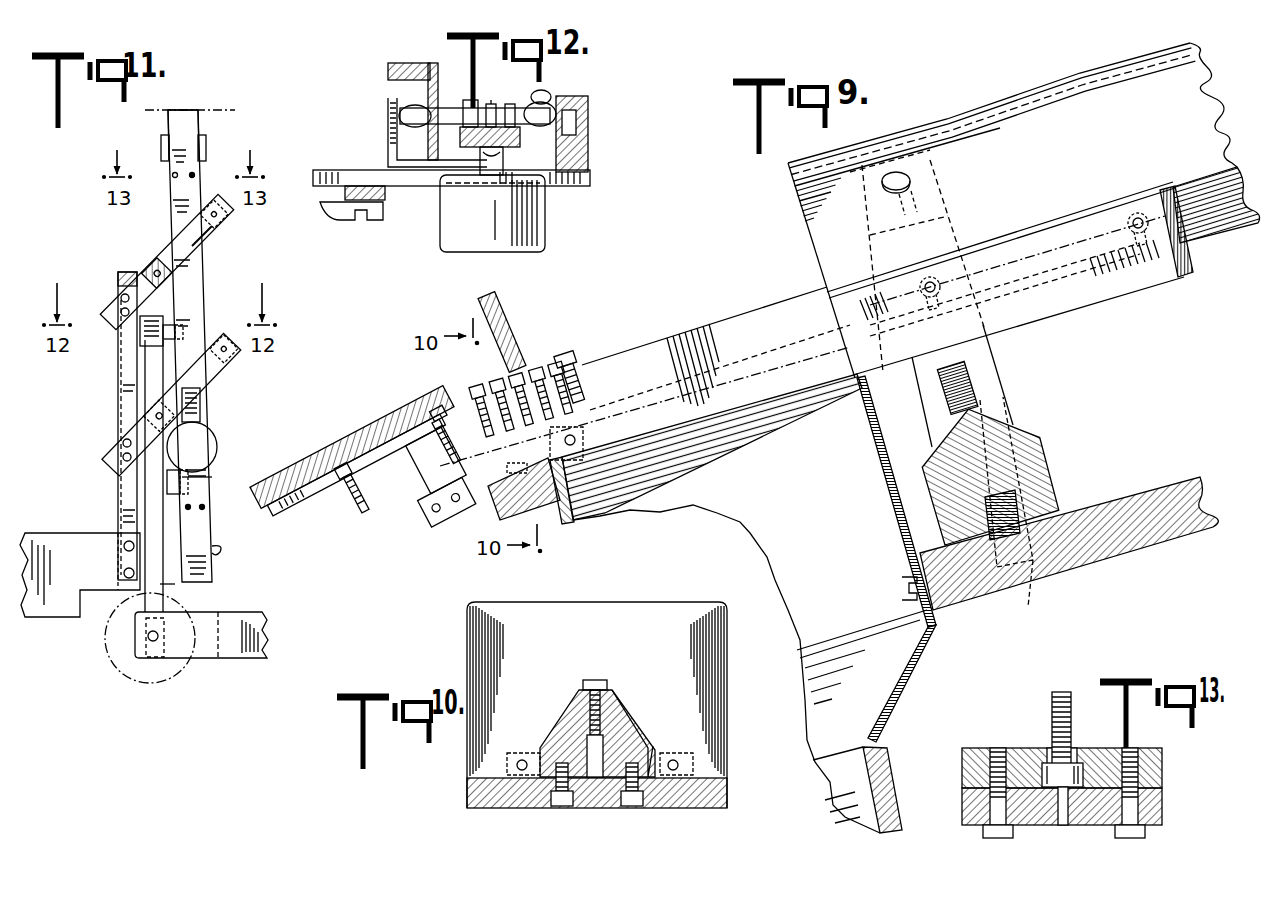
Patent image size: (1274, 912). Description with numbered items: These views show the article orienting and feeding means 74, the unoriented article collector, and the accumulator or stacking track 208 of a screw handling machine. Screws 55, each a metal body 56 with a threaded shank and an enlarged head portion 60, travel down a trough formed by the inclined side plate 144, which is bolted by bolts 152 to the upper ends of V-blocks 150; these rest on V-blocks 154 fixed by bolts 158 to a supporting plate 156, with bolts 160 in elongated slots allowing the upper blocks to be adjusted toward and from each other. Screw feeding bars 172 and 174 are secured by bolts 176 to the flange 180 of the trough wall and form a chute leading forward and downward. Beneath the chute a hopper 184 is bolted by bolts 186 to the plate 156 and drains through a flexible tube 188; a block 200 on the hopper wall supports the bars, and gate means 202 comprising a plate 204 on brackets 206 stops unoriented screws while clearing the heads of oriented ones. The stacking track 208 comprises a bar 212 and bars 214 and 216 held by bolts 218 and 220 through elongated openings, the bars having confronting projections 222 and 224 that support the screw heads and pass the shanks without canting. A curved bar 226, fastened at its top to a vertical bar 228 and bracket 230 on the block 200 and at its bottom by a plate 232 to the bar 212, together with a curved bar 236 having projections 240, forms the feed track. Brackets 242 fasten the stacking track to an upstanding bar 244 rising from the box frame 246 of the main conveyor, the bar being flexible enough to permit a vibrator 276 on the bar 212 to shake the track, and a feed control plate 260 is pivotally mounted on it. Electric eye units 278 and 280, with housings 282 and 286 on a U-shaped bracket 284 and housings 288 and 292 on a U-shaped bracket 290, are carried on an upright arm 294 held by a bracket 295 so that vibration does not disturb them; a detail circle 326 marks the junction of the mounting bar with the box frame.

In FIG. 12, the screw 55 is at (493, 100).
In FIG. 13, the metal body 56 is at (1052, 703).
In FIG. 9, the metal body 56 is at (586, 398).
In FIG. 10, the head portion 60 is at (595, 678).
In FIG. 13, the head portion 60 is at (1059, 780).
In FIG. 9, the head portion 60 is at (583, 363).
In FIG. 9, the article orienting and feeding means 74 is at (803, 276).
In FIG. 9, the inclined side plate 144 is at (990, 102).
In FIG. 9, the V-block 150 is at (988, 370).
In FIG. 9, the bolt 152 is at (897, 172).
In FIG. 9, the V-block 154 is at (1030, 440).
In FIG. 9, the supporting plate 156 is at (1137, 492).
In FIG. 9, the bolt 158 is at (1030, 590).
In FIG. 9, the bolt 160 is at (985, 390).
In FIG. 10, the screw feeding bar 172 is at (557, 730).
In FIG. 9, the screw feeding bar 172 is at (705, 333).
In FIG. 10, the screw feeding bar 174 is at (623, 733).
In FIG. 9, the screw feeding bar 174 is at (1026, 261).
In FIG. 9, the bolt 176 is at (942, 287).
In FIG. 9, the flange 180 is at (1230, 220).
In FIG. 9, the hopper 184 is at (792, 566).
In FIG. 9, the bolt 186 is at (902, 583).
In FIG. 9, the flexible tube 188 is at (865, 820).
In FIG. 10, the block 200 is at (470, 795).
In FIG. 9, the block 200 is at (550, 497).
In FIG. 10, the gate means 202 is at (466, 636).
In FIG. 9, the gate means 202 is at (527, 301).
In FIG. 10, the plate 204 is at (466, 664).
In FIG. 9, the plate 204 is at (513, 337).
In FIG. 10, the bracket 206 is at (520, 752).
In FIG. 9, the bracket 206 is at (572, 447).
In FIG. 13, the stacking track 208 is at (960, 760).
In FIG. 9, the stacking track 208 is at (353, 427).
In FIG. 11, the bar 212 is at (172, 190).
In FIG. 12, the bar 212 is at (527, 140).
In FIG. 13, the bar 212 is at (1157, 824).
In FIG. 12, the bar 214 is at (467, 107).
In FIG. 13, the bar 214 is at (980, 750).
In FIG. 12, the bar 216 is at (513, 115).
In FIG. 13, the bar 216 is at (1157, 757).
In FIG. 13, the bolt 218 is at (987, 812).
In FIG. 13, the bolt 220 is at (1167, 803).
In FIG. 13, the projection 222 is at (1048, 752).
In FIG. 13, the projection 224 is at (1077, 748).
In FIG. 11, the bar 226 is at (182, 112).
In FIG. 9, the bar 226 is at (270, 470).
In FIG. 9, the vertical bar 228 is at (420, 487).
In FIG. 9, the bracket 230 is at (427, 517).
In FIG. 11, the plate 232 is at (160, 148).
In FIG. 9, the curved bar 236 is at (340, 500).
In FIG. 9, the projection 240 is at (387, 457).
In FIG. 11, the bracket 242 is at (183, 328).
In FIG. 12, the bracket 242 is at (440, 153).
In FIG. 11, the upstanding bar 244 is at (160, 585).
In FIG. 12, the upstanding bar 244 is at (402, 62).
In FIG. 11, the box frame 246 is at (260, 657).
In FIG. 11, the feed control plate 260 is at (220, 551).
In FIG. 11, the vibrator 276 is at (202, 445).
In FIG. 12, the vibrator 276 is at (527, 233).
In FIG. 11, the electric eye unit 278 is at (230, 375).
In FIG. 11, the electric eye unit 280 is at (220, 240).
In FIG. 11, the housing 282 is at (147, 407).
In FIG. 12, the housing 282 is at (420, 117).
In FIG. 11, the U-shaped bracket 284 is at (200, 388).
In FIG. 12, the U-shaped bracket 284 is at (588, 117).
In FIG. 11, the housing 286 is at (217, 340).
In FIG. 12, the housing 286 is at (547, 87).
In FIG. 11, the housing 288 is at (148, 263).
In FIG. 11, the U-shaped bracket 290 is at (207, 242).
In FIG. 11, the housing 292 is at (227, 218).
In FIG. 11, the upright arm 294 is at (137, 383).
In FIG. 12, the upright arm 294 is at (337, 170).
In FIG. 11, the bracket 295 is at (60, 542).
In FIG. 12, the bracket 295 is at (350, 217).
In FIG. 11, the detail circle 326 is at (150, 685).